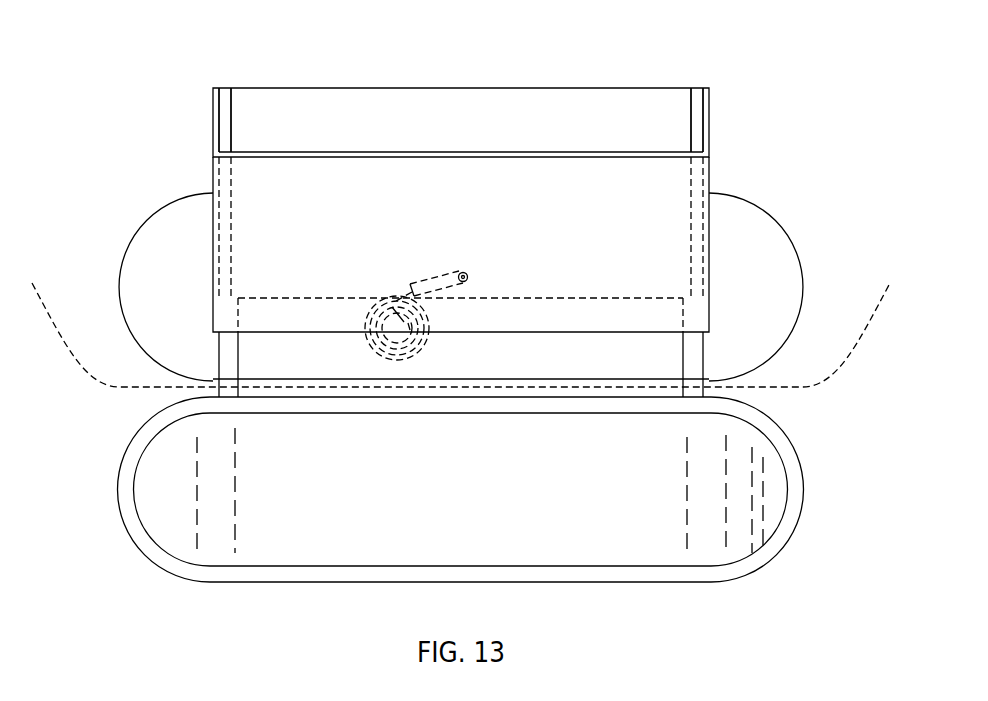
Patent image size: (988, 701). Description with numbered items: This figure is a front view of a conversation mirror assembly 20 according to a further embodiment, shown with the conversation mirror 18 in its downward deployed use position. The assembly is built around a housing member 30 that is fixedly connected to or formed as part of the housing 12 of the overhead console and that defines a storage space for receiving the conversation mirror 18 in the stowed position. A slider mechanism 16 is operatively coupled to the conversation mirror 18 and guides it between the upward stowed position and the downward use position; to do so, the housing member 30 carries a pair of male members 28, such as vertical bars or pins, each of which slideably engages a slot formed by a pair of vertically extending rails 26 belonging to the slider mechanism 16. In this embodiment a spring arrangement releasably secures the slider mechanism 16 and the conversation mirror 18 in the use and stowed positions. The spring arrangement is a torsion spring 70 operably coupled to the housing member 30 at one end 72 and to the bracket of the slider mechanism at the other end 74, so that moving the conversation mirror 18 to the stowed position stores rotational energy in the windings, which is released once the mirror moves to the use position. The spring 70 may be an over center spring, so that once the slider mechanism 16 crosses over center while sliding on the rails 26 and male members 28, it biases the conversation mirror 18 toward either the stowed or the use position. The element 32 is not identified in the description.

The housing 12 is at (125, 390).
The slider mechanism 16 is at (685, 285).
The conversation mirror 18 is at (323, 507).
The conversation mirror assembly 20 is at (510, 489).
The rails 26 is at (230, 355).
The male members 28 is at (233, 96).
The housing member 30 is at (213, 100).
The wheel 32 is at (148, 263).
The torsion spring 70 is at (388, 352).
The spring end 72 is at (465, 270).
The spring end 74 is at (384, 302).